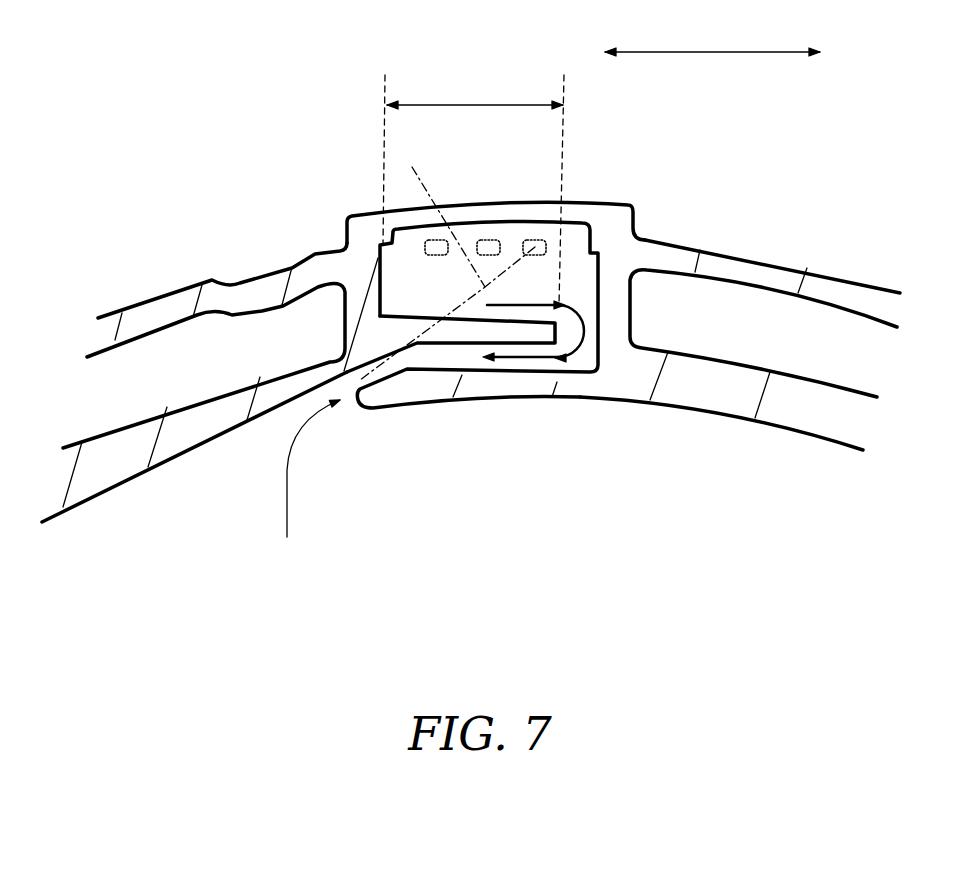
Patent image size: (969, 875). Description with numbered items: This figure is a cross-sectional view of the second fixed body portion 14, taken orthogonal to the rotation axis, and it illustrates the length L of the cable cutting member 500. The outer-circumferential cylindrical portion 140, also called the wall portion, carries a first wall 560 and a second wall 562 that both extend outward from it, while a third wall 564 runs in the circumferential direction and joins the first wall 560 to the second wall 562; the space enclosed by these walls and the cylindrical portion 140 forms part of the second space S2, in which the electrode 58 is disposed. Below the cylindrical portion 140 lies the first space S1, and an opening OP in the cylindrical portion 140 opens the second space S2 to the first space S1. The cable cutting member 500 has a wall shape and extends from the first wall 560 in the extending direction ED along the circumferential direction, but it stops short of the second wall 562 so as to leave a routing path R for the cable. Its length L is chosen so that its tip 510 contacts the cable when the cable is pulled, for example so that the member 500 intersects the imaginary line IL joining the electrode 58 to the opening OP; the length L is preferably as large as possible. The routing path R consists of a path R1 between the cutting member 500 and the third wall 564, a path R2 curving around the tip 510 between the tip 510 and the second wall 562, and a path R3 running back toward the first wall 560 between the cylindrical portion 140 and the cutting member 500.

The second fixed body portion 14 is at (694, 566).
The outer-circumferential cylindrical portion 140 is at (167, 443).
The electrode 58 is at (533, 240).
The cable cutting member 500 is at (475, 333).
The tip of the cable cutting member 510 is at (545, 333).
The first wall 560 is at (363, 287).
The second wall 562 is at (618, 305).
The third wall 564 is at (482, 213).
The second space S2 is at (600, 222).
The first space S1 is at (446, 558).
The imaginary line IL is at (447, 260).
The opening OP is at (304, 476).
The length of the cable cutting member L is at (473, 190).
The extending direction ED is at (712, 41).
The routing path R is at (620, 602).
The path R1 is at (528, 305).
The path R2 is at (587, 343).
The path R3 is at (507, 357).